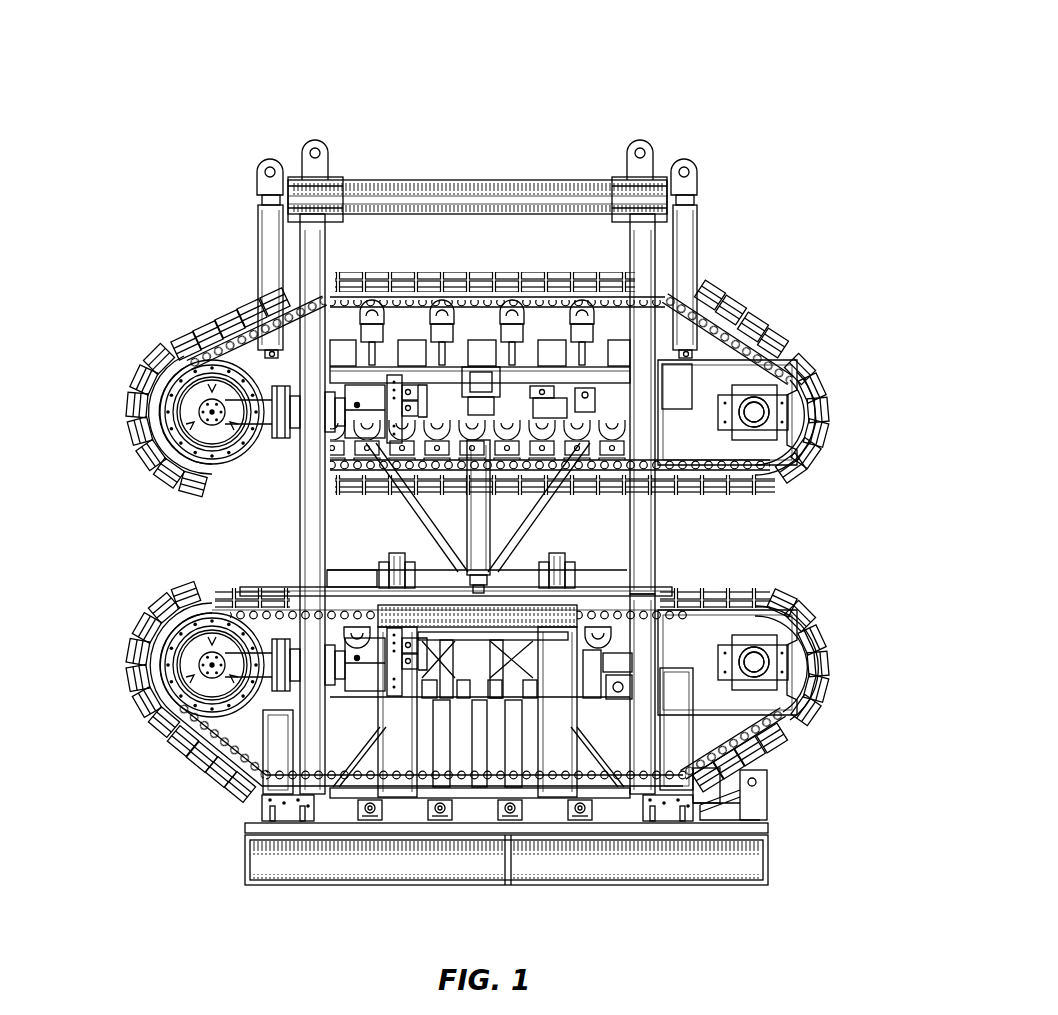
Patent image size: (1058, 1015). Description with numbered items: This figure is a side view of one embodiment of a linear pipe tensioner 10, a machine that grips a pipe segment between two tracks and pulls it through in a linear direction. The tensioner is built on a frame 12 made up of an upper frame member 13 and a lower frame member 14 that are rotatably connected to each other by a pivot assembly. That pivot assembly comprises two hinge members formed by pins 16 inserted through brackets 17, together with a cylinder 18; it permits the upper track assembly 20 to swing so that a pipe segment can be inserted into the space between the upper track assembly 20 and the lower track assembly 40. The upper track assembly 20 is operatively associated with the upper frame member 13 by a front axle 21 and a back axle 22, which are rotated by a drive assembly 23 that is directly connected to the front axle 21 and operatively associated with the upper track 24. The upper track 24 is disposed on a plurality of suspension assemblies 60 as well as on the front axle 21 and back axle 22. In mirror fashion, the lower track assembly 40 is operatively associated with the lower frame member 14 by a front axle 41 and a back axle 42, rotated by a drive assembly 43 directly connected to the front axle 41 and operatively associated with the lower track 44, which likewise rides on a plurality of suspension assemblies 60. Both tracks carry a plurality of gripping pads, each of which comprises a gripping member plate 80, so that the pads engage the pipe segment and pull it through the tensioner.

The linear pipe tensioner 10 is at (837, 66).
The frame 12 is at (490, 182).
The upper frame member 13 is at (640, 520).
The lower frame member 14 is at (642, 632).
The pins 16 is at (548, 572).
The brackets 17 is at (392, 555).
The cylinder 18 is at (480, 490).
The upper track assembly 20 is at (790, 362).
The front axle 21 is at (214, 430).
The back axle 22 is at (770, 410).
The drive assembly 23 is at (180, 428).
The upper track 24 is at (760, 330).
The lower track assembly 40 is at (780, 710).
The front axle 41 is at (210, 658).
The back axle 42 is at (770, 667).
The drive assembly 43 is at (195, 658).
The lower track 44 is at (745, 748).
The suspension assemblies 60 is at (452, 338).
The gripping member plate 80 is at (700, 290).